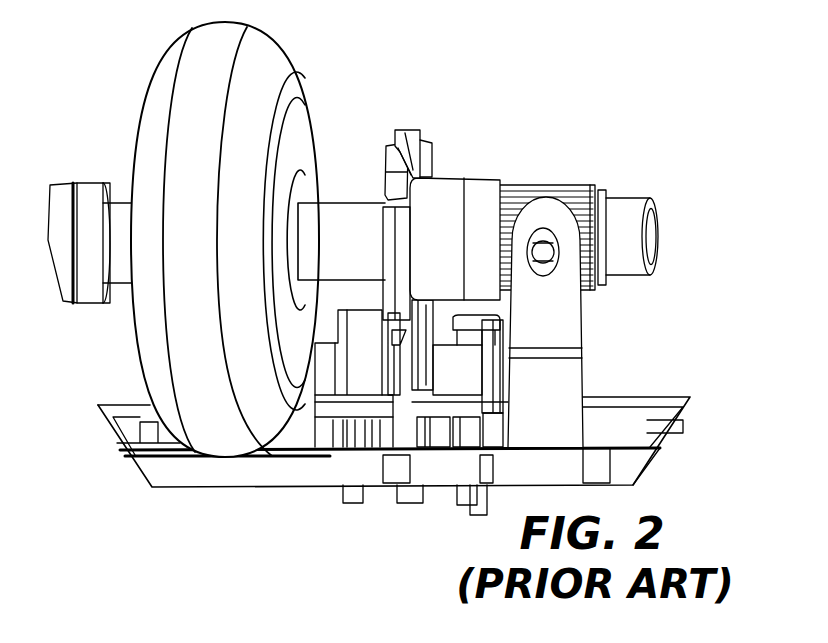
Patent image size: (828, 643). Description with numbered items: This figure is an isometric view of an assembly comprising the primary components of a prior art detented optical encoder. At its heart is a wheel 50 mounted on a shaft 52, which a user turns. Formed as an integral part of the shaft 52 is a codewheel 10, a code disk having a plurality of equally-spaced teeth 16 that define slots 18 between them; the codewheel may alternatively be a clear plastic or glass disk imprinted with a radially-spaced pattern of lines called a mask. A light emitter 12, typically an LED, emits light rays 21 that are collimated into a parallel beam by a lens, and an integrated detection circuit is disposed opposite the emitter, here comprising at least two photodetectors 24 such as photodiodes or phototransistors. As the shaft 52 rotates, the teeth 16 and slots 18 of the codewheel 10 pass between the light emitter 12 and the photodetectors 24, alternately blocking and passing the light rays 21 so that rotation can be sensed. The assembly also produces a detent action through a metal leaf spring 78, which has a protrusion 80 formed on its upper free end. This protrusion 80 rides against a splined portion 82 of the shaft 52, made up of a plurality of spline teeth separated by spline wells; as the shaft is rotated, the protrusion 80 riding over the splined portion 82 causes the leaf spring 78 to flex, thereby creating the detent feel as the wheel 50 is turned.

The codewheel 10 is at (375, 187).
The light emitter 12 is at (412, 353).
The teeth 16 is at (386, 152).
The slots 18 is at (393, 190).
The light rays 21 is at (465, 176).
The photodetectors 24 is at (388, 330).
The wheel 50 is at (210, 412).
The shaft 52 is at (622, 200).
The metal leaf spring 78 is at (563, 328).
The protrusion 80 is at (548, 254).
The splined portion 82 is at (597, 186).